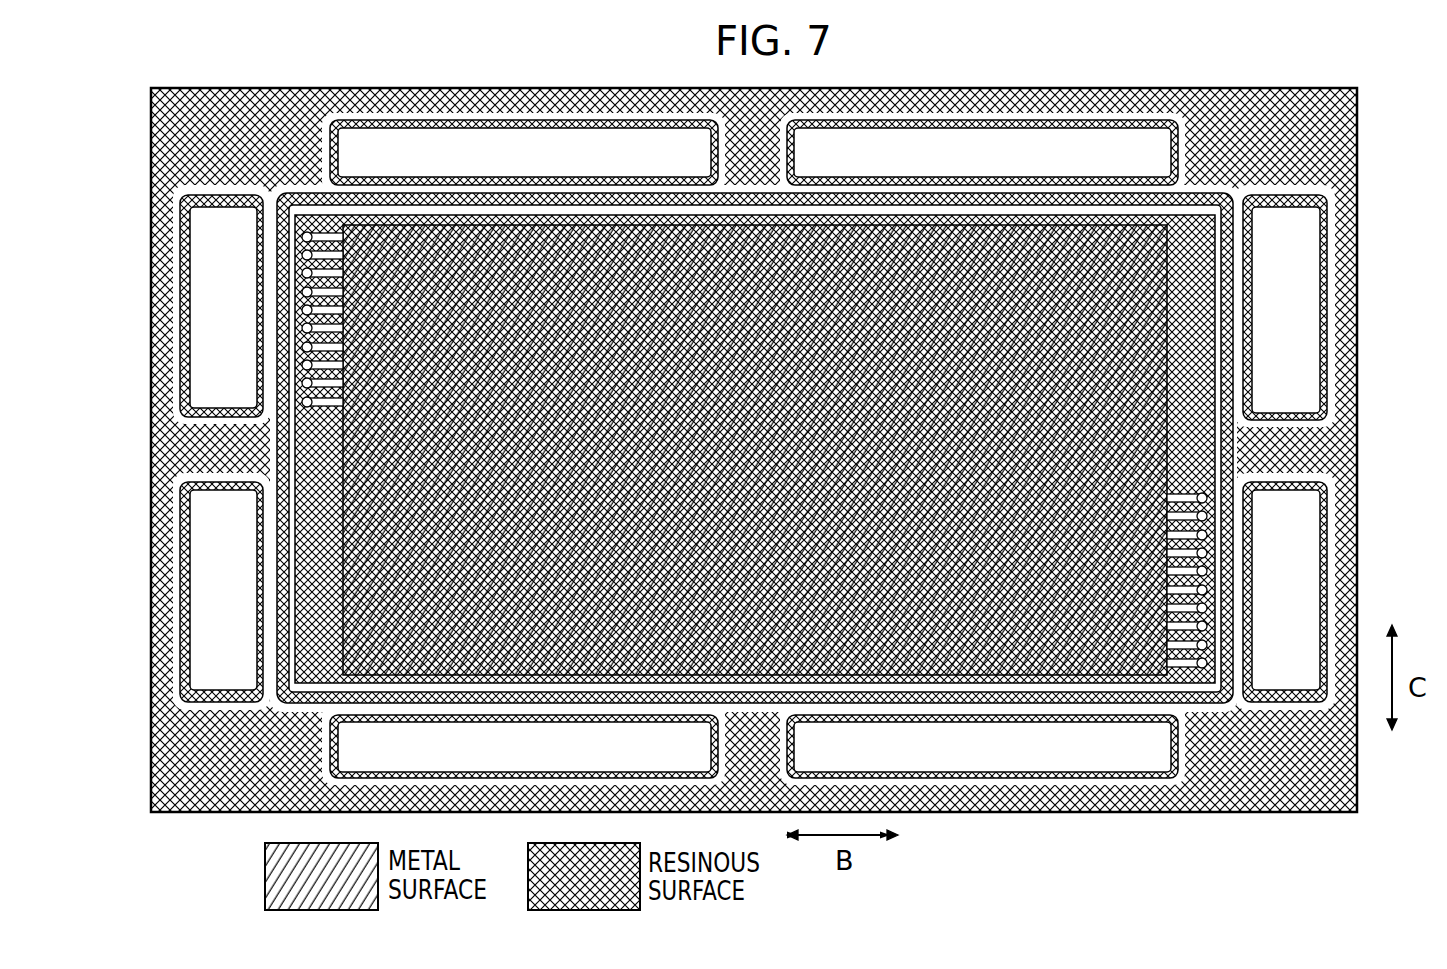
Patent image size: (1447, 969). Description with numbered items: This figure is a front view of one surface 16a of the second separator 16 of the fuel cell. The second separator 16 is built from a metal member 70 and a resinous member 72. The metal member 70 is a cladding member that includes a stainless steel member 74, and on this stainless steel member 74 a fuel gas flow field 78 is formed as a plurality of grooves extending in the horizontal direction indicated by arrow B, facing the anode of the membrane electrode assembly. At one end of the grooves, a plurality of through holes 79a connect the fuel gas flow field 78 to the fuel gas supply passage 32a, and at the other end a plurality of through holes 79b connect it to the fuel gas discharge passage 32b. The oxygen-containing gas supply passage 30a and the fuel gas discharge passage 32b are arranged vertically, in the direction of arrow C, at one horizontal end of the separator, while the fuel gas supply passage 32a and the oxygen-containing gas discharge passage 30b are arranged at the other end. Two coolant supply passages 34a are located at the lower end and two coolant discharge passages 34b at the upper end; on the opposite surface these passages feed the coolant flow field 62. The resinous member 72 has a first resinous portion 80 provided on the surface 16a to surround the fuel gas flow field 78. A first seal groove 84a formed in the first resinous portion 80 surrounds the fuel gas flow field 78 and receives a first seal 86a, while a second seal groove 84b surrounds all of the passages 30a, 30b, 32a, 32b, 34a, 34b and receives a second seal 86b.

The second separator 16 is at (1121, 70).
The surface of the second separator 16a is at (1202, 812).
The oxygen-containing gas supply passage 30a is at (1285, 307).
The oxygen-containing gas discharge passage 30b is at (221, 592).
The fuel gas supply passage 32a is at (221, 306).
The fuel gas discharge passage 32b is at (1285, 592).
The coolant supply passages 34a is at (754, 746).
The coolant discharge passages 34b is at (754, 152).
The coolant flow field 62 is at (310, 673).
The metal member 70 is at (562, 215).
The resinous member 72 is at (1368, 508).
The stainless steel member 74 is at (392, 645).
The fuel gas flow field 78 is at (400, 253).
The through holes 79a is at (300, 400).
The through holes 79b is at (1205, 553).
The first resinous portion 80 is at (1330, 452).
The first seal groove 84a is at (632, 698).
The second seal groove 84b is at (150, 648).
The first seal 86a is at (832, 681).
The second seal 86b is at (178, 613).